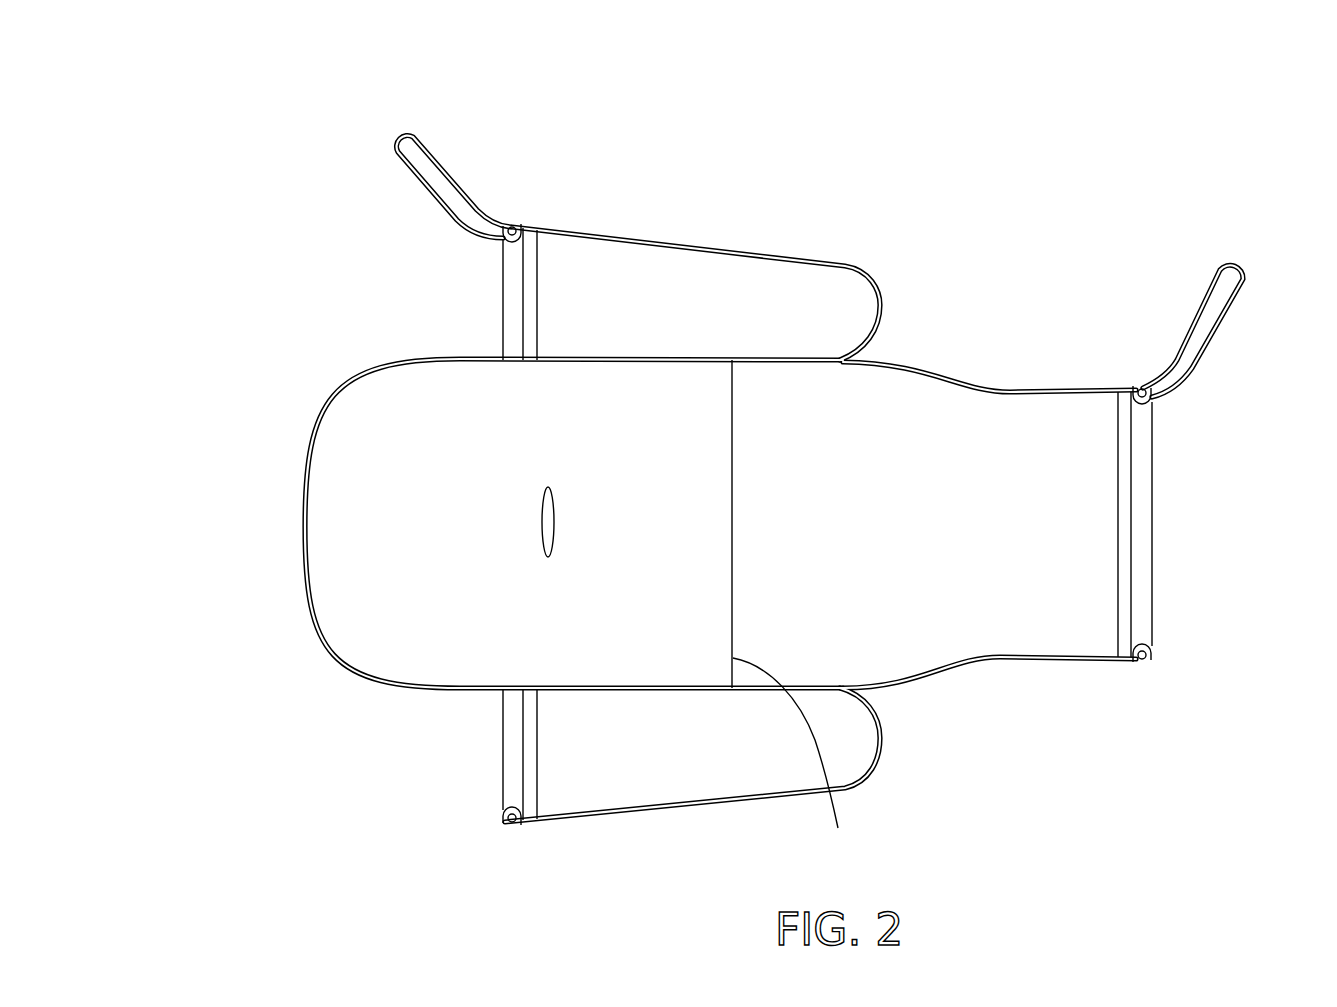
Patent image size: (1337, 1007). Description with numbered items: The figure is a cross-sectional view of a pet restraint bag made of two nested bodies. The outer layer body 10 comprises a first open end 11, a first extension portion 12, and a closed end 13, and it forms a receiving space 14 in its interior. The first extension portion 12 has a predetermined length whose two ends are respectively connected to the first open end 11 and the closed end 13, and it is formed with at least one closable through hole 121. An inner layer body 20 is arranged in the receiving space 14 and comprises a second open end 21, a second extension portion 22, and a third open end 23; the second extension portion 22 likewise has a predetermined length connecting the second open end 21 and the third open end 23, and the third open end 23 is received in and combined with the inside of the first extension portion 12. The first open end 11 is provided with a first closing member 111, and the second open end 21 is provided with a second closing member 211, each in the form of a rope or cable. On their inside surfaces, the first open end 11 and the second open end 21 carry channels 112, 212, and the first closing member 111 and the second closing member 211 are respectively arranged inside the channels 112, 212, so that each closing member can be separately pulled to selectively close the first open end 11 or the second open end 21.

The outer layer body 10 is at (803, 152).
The first open end 11 is at (528, 228).
The first closing member 111 is at (394, 125).
The channel 112 is at (515, 287).
The first extension portion 12 is at (700, 243).
The closable through hole 121 is at (542, 545).
The closed end 13 is at (305, 537).
The receiving space 14 is at (375, 443).
The inner layer body 20 is at (1075, 758).
The second open end 21 is at (1128, 665).
The second closing member 211 is at (1240, 265).
The channel 212 is at (1147, 490).
The second extension portion 22 is at (992, 662).
The third open end 23 is at (799, 774).